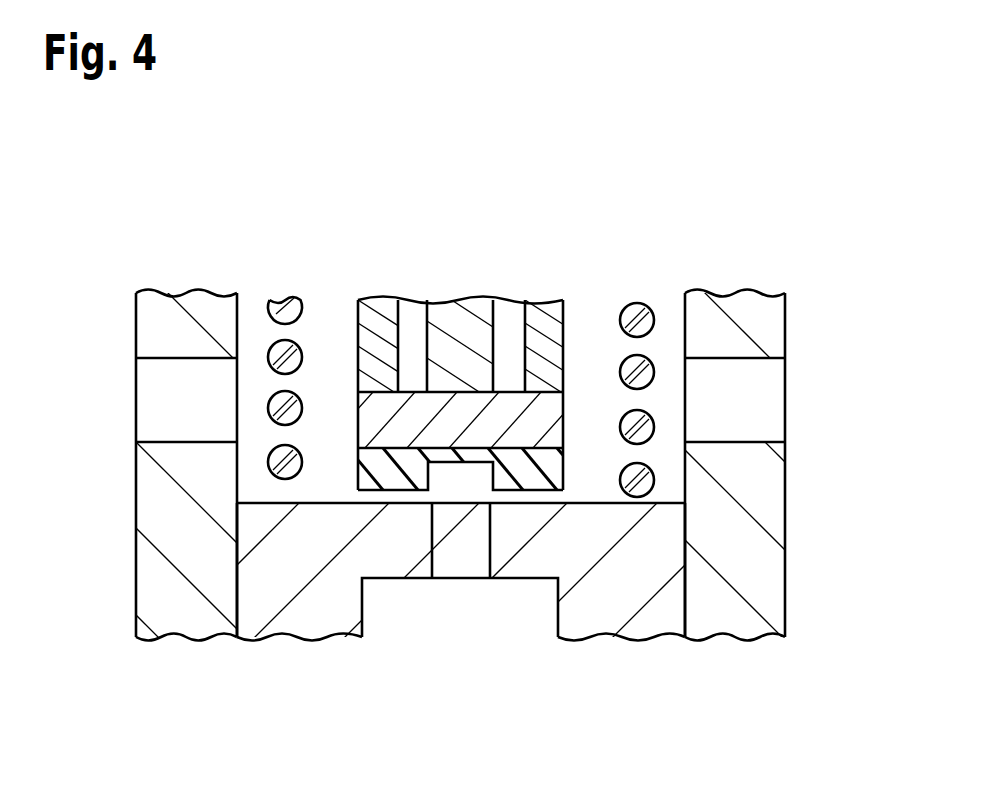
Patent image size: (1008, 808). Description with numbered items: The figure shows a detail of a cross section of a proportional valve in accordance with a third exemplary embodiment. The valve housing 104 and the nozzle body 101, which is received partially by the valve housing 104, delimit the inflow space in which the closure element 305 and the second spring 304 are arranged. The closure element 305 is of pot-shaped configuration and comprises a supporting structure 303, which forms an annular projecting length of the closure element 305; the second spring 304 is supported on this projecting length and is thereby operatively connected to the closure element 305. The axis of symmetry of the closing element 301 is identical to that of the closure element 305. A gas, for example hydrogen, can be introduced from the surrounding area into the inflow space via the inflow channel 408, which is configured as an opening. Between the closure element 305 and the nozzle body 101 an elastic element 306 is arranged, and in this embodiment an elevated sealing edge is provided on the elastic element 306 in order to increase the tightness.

The nozzle body 101 is at (318, 605).
The valve housing 104 is at (165, 493).
The closing element 301 is at (466, 312).
The supporting structure 303 is at (546, 313).
The second spring 304 is at (643, 482).
The closure element 305 is at (580, 278).
The elastic element 306 is at (532, 465).
The inflow channel 408 is at (762, 402).